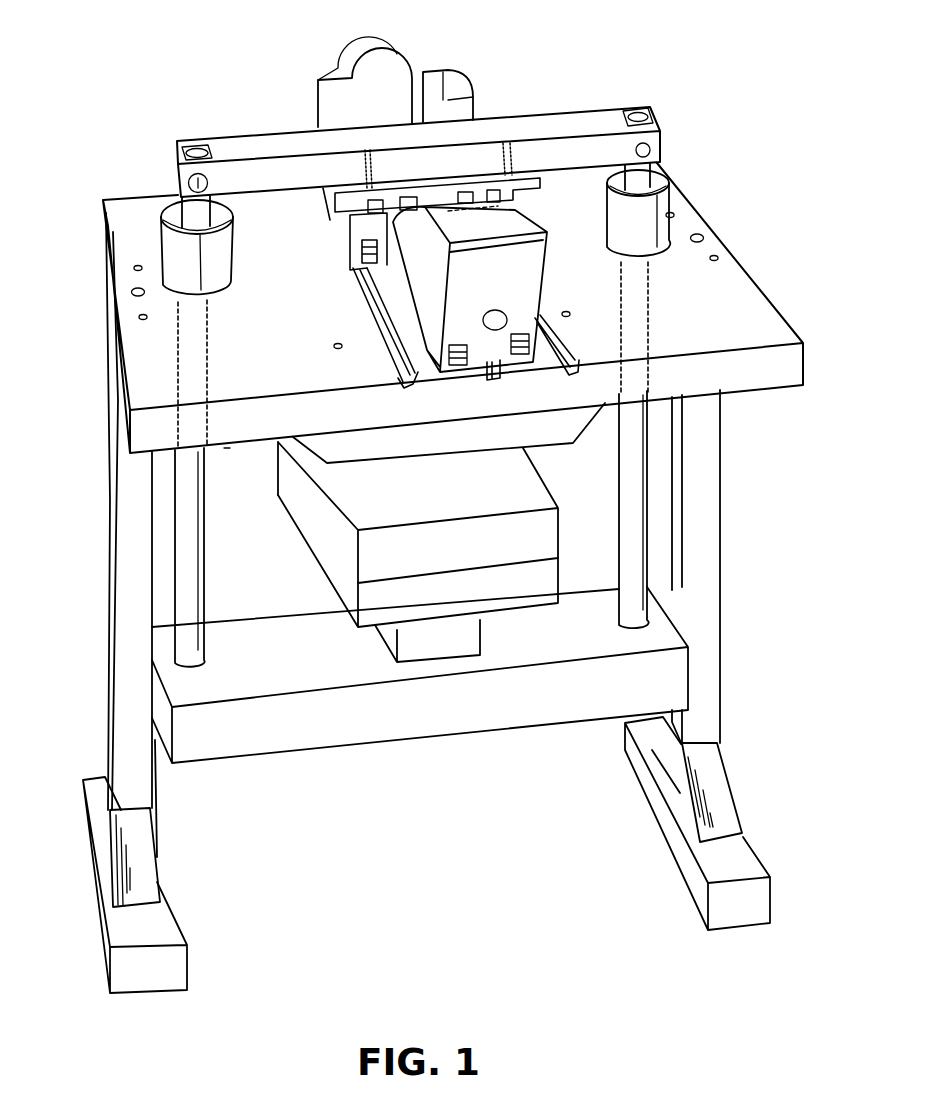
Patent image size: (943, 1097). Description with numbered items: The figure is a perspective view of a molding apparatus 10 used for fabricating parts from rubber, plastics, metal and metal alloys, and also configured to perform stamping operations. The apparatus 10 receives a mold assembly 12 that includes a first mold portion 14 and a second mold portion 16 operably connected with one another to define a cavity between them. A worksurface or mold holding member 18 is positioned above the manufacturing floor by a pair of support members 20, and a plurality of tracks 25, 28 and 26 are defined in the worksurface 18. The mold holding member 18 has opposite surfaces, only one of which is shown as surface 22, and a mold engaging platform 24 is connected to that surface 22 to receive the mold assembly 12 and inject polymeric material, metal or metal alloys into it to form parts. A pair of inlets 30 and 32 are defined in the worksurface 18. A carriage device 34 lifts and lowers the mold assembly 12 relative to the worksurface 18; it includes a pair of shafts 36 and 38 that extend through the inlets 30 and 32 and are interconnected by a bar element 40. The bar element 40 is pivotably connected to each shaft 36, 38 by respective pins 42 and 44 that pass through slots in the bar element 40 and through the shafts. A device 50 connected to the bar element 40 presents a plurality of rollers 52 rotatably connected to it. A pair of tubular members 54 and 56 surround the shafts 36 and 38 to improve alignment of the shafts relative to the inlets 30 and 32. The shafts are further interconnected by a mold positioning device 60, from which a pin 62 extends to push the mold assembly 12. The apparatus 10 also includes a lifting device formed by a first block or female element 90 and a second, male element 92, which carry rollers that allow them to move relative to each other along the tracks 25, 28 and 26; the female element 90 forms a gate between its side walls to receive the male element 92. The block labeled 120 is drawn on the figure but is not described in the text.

The molding apparatus 10 is at (93, 131).
The mold assembly 12 is at (506, 526).
The first mold portion 14 is at (448, 559).
The second mold portion 16 is at (448, 603).
The worksurface 18 is at (735, 325).
The support members 20 is at (118, 634).
The surface 22 is at (227, 448).
The mold engaging platform 24 is at (484, 437).
The track 25 is at (560, 345).
The track 26 is at (507, 365).
The track 28 is at (415, 375).
The inlet 30 is at (655, 322).
The inlet 32 is at (212, 378).
The carriage device 34 is at (568, 134).
The shaft 36 is at (635, 484).
The shaft 38 is at (203, 577).
The bar element 40 is at (288, 146).
The pin 42 is at (658, 149).
The pin 44 is at (190, 181).
The device 50 is at (527, 197).
The rollers 52 is at (414, 198).
The tubular member 54 is at (655, 224).
The tubular member 56 is at (180, 258).
The mold positioning device 60 is at (578, 686).
The pin 62 is at (478, 630).
The female element 90 is at (452, 92).
The male element 92 is at (480, 281).
The cam block 120 is at (368, 72).